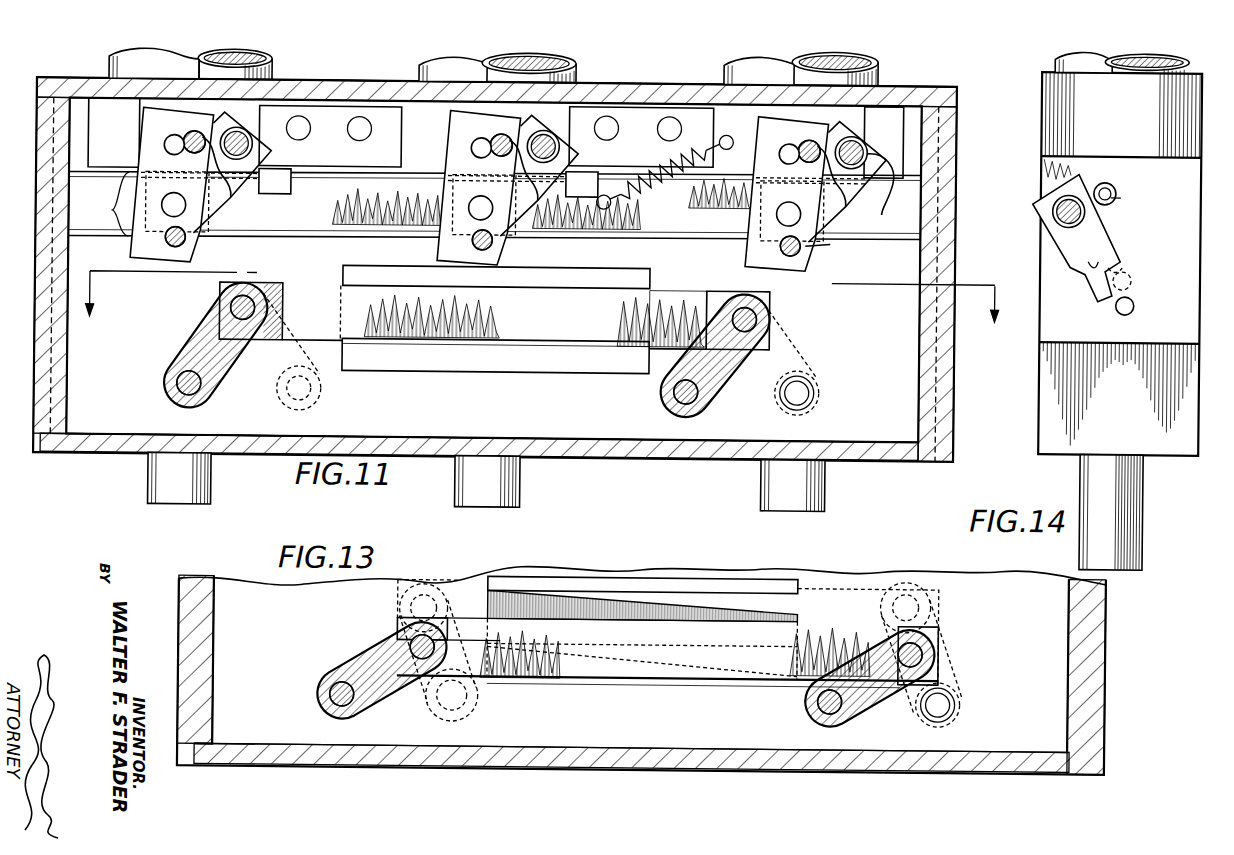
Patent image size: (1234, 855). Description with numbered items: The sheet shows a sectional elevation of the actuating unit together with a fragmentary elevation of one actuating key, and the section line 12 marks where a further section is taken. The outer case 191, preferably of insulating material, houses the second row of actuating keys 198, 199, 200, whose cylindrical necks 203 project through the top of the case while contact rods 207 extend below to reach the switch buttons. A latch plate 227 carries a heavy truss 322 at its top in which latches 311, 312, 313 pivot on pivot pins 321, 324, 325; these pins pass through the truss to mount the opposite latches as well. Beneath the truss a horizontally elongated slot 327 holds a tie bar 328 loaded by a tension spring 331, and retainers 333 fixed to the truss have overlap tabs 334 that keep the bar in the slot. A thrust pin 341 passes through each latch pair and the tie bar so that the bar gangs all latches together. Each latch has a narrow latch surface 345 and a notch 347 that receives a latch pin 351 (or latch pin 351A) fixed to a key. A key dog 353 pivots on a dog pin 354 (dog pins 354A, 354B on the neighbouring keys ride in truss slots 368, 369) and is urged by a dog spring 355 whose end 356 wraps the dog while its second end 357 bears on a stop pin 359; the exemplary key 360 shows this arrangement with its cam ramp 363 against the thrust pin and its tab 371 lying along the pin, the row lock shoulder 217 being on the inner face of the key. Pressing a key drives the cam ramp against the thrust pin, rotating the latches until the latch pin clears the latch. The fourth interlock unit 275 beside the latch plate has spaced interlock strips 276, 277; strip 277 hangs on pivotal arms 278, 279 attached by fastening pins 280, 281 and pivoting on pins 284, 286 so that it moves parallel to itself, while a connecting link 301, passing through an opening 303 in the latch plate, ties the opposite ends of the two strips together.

In FIG. 11, the outer case 191 is at (952, 216).
In FIG. 13, the outer case 191 is at (1102, 666).
In FIG. 11, the actuating key 198 is at (272, 74).
In FIG. 11, the actuating key 199 is at (590, 74).
In FIG. 11, the actuating key 200 is at (880, 72).
In FIG. 14, the cylindrical neck 203 is at (1073, 115).
In FIG. 11, the contact rod 207 is at (214, 496).
In FIG. 14, the contact rod 207 is at (1143, 517).
In FIG. 14, the row lock shoulder 217 is at (1072, 345).
In FIG. 11, the latch plate 227 is at (884, 363).
In FIG. 13, the latch plate 227 is at (578, 729).
In FIG. 11, the interlock unit 275 is at (660, 302).
In FIG. 13, the interlock unit 275 is at (830, 636).
In FIG. 13, the interlock strip 276 is at (632, 590).
In FIG. 11, the interlock strip 277 is at (552, 338).
In FIG. 13, the interlock strip 277 is at (650, 684).
In FIG. 11, the pivotal arm 278 is at (717, 392).
In FIG. 13, the pivotal arm 278 is at (872, 696).
In FIG. 11, the pivotal arm 279 is at (200, 348).
In FIG. 13, the pivotal arm 279 is at (362, 672).
In FIG. 13, the fastening pin 280 is at (936, 664).
In FIG. 13, the fastening pin 281 is at (400, 649).
In FIG. 13, the pivot pin 284 is at (812, 700).
In FIG. 13, the pivot pin 286 is at (326, 712).
In FIG. 13, the connecting link 301 is at (745, 607).
In FIG. 11, the opening 303 is at (428, 373).
In FIG. 13, the opening 303 is at (705, 592).
In FIG. 11, the latch 311 is at (762, 126).
In FIG. 11, the latch 312 is at (461, 126).
In FIG. 11, the latch 313 is at (156, 130).
In FIG. 11, the pivot pin 321 is at (786, 142).
In FIG. 11, the truss 322 is at (955, 90).
In FIG. 11, the pivot pin 324 is at (472, 148).
In FIG. 11, the pivot pin 325 is at (172, 140).
In FIG. 11, the slot 327 is at (122, 212).
In FIG. 11, the tie bar 328 is at (312, 242).
In FIG. 11, the tension spring 331 is at (672, 170).
In FIG. 11, the retainer 333 is at (336, 176).
In FIG. 11, the overlap tab 334 is at (268, 194).
In FIG. 11, the thrust pin 341 is at (161, 207).
In FIG. 14, the thrust pin 341 is at (1132, 283).
In FIG. 11, the latch surface 345 is at (795, 268).
In FIG. 11, the notch 347 is at (802, 250).
In FIG. 11, the latch pin 351 is at (830, 243).
In FIG. 14, the latch pin 351 is at (1118, 310).
In FIG. 11, the latch pin 351A is at (498, 268).
In FIG. 11, the key dog 353 is at (892, 192).
In FIG. 11, the dog pin 354 is at (864, 150).
In FIG. 14, the dog pin 354 is at (1070, 206).
In FIG. 11, the dog pin 354A is at (541, 128).
In FIG. 11, the dog pin 354B is at (235, 130).
In FIG. 11, the dog spring 355 is at (888, 119).
In FIG. 14, the dog spring 355 is at (1110, 190).
In FIG. 14, the spring end 356 is at (1082, 276).
In FIG. 14, the spring end 357 is at (1117, 203).
In FIG. 14, the stop pin 359 is at (1122, 199).
In FIG. 14, the exemplary key 360 is at (1045, 425).
In FIG. 14, the cam ramp 363 is at (1115, 270).
In FIG. 11, the slot 368 is at (496, 138).
In FIG. 11, the slot 369 is at (262, 160).
In FIG. 14, the tab 371 is at (1080, 262).
In FIG. 11, the section line 12 is at (541, 298).